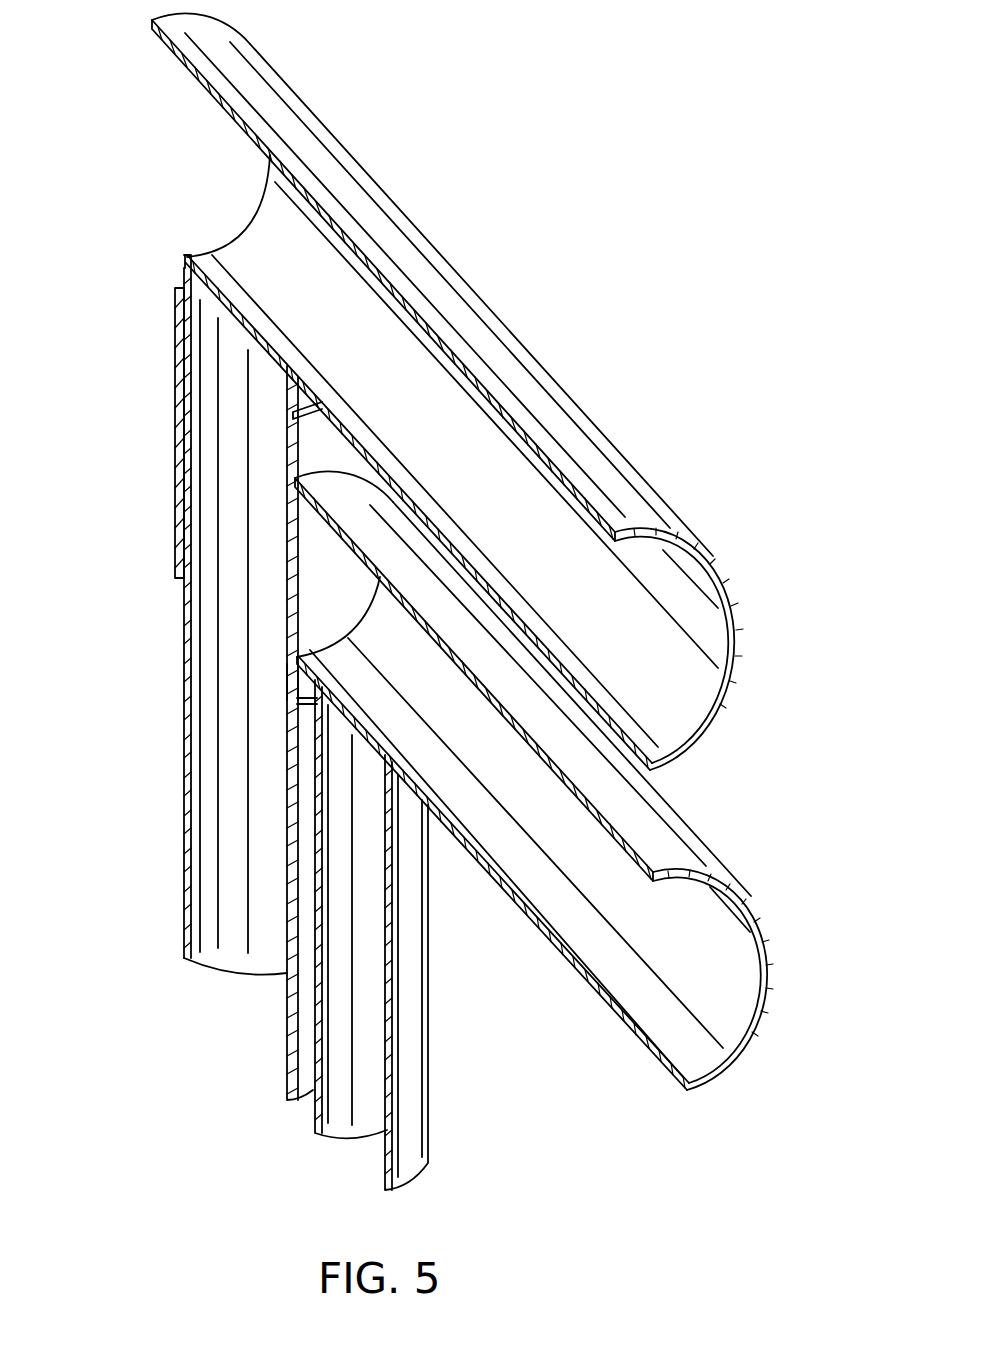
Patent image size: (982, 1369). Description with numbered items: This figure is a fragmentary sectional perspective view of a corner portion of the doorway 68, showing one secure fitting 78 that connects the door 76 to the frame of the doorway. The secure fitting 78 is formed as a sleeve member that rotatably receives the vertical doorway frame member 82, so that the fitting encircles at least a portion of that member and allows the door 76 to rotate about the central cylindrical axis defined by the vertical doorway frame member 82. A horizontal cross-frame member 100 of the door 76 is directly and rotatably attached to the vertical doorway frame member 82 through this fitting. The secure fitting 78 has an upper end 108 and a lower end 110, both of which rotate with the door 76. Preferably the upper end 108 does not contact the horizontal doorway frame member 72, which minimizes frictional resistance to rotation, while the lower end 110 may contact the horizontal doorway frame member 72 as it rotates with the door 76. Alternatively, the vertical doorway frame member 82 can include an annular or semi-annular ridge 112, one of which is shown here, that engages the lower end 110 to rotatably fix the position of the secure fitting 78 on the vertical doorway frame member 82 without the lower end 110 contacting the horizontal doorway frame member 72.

The doorway 68 is at (456, 601).
The horizontal doorway frame member 72 is at (722, 706).
The door 76 is at (570, 780).
The secure fitting 78 is at (172, 466).
The vertical doorway frame member 82 is at (207, 793).
The horizontal cross-frame member 100 is at (738, 993).
The upper end 108 is at (300, 445).
The lower end 110 is at (292, 688).
The ridge 112 is at (300, 706).